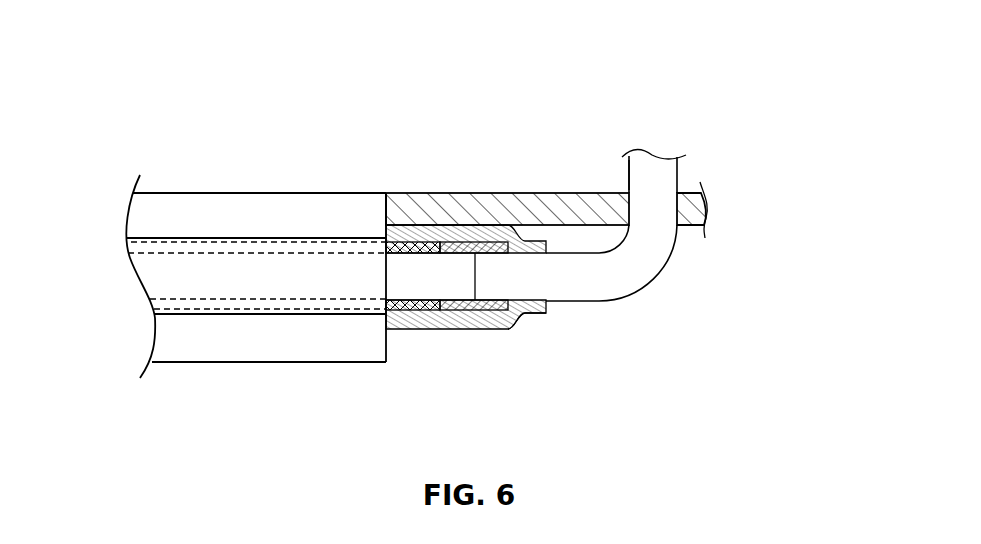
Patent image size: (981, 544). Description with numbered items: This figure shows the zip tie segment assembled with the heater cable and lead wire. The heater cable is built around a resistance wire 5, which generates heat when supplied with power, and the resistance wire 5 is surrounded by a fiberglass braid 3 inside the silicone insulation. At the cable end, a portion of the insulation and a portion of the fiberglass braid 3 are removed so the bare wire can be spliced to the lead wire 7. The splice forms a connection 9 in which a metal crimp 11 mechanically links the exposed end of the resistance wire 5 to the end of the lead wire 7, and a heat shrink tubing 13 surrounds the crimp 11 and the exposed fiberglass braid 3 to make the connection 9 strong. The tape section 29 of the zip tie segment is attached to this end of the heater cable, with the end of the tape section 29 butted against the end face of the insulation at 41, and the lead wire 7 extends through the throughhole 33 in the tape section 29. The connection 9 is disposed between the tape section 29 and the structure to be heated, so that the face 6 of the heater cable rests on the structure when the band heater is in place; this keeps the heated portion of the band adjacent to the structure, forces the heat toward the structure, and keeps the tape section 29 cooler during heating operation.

The fiberglass braid 3 is at (420, 309).
The resistance wire 5 is at (155, 273).
The face 6 is at (290, 362).
The lead wire 7 is at (622, 270).
The connection 9 is at (534, 333).
The metal crimp 11 is at (485, 309).
The heat shrink tubing 13 is at (428, 318).
The tape section 29 is at (438, 192).
The throughhole 33 is at (627, 189).
The butt location 41 is at (385, 182).